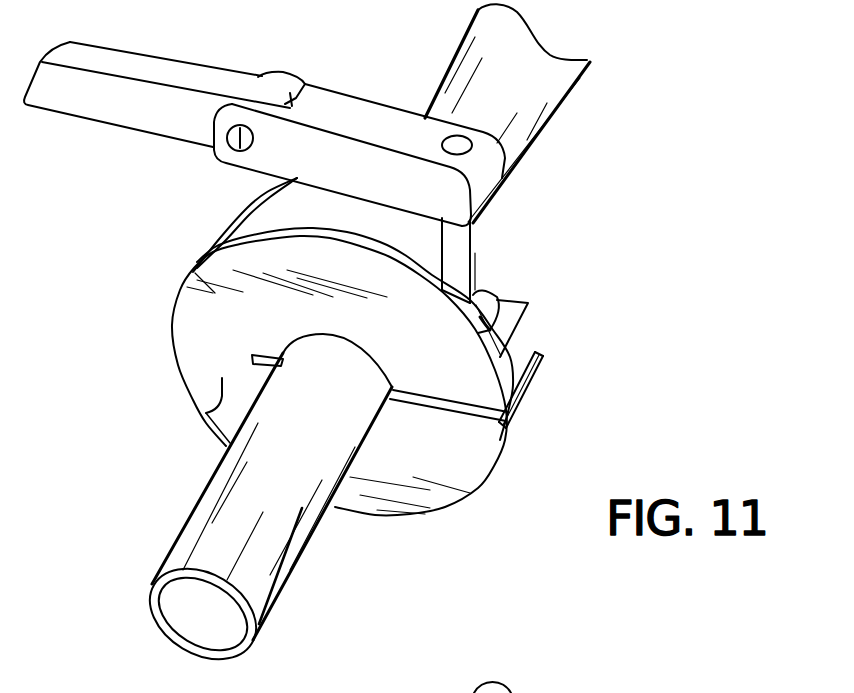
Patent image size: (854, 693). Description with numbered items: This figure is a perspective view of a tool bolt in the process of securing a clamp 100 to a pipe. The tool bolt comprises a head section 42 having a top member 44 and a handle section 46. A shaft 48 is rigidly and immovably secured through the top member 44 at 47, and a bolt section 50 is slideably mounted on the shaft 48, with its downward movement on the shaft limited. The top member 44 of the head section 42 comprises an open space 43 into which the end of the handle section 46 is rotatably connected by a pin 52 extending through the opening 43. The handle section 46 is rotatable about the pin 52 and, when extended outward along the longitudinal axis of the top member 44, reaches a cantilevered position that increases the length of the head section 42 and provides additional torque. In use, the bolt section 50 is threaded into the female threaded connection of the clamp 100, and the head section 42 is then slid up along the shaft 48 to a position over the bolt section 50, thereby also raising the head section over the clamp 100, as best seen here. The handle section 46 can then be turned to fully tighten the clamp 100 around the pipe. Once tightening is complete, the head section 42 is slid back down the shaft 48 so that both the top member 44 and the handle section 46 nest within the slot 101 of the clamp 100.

The head section 42 is at (356, 86).
The open space 43 is at (295, 96).
The top member 44 is at (283, 161).
The handle section 46 is at (98, 108).
The securing location of shaft through top member 47 is at (458, 147).
The shaft 48 is at (475, 257).
The bolt section 50 is at (486, 316).
The pin 52 is at (240, 138).
The clamp 100 is at (230, 443).
The slot 101 is at (258, 218).